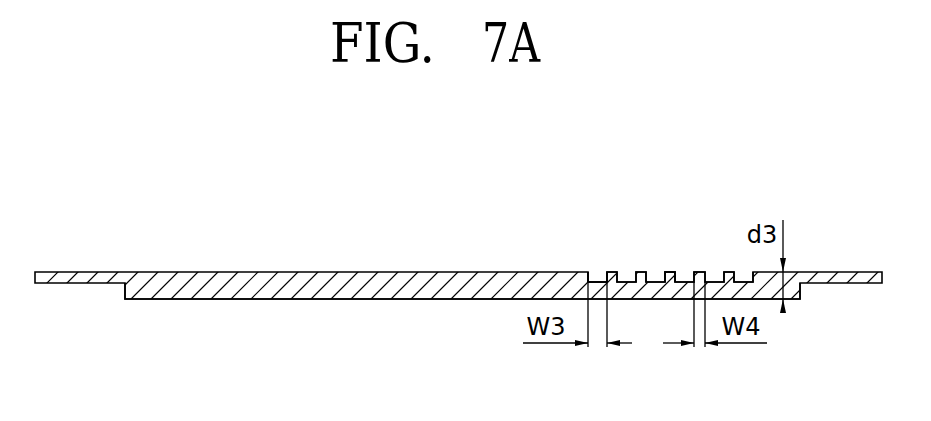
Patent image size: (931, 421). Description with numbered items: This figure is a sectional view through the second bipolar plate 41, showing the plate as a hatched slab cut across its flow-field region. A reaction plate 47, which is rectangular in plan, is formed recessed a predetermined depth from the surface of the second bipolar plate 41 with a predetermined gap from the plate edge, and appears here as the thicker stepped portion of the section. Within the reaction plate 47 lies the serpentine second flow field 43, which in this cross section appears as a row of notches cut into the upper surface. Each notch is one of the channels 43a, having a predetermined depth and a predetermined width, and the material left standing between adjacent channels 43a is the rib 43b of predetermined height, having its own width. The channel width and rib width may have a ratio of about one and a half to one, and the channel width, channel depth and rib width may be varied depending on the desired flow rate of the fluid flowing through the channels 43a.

The second bipolar plate 41 is at (812, 229).
The second flow field 43 is at (602, 185).
The channels 43a is at (600, 272).
The rib 43b is at (672, 272).
The reaction plate 47 is at (145, 299).